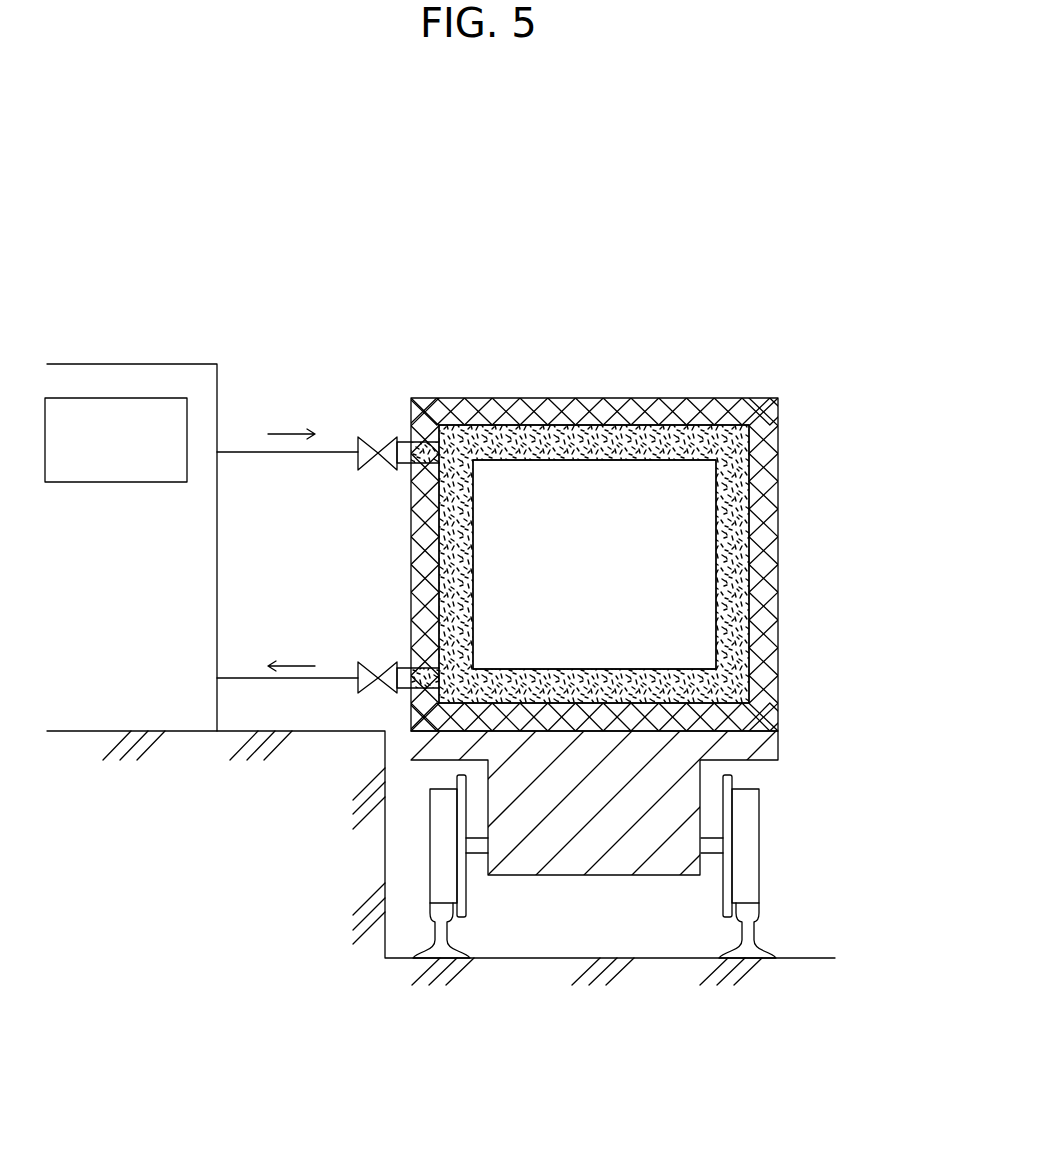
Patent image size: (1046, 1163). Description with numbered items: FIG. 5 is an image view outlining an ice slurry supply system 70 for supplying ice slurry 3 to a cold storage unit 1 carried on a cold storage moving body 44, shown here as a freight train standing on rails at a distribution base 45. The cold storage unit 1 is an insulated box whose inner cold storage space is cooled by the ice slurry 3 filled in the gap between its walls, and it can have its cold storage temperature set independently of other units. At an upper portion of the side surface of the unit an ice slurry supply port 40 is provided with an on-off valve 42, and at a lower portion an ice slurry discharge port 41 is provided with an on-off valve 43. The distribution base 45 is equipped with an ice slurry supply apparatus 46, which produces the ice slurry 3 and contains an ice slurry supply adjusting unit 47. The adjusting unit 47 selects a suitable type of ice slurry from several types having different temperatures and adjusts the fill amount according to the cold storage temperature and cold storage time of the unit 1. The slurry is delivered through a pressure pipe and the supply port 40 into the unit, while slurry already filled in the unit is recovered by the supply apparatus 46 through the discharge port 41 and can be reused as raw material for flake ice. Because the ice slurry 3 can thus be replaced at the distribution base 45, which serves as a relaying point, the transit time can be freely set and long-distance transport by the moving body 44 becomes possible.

The cold storage unit 1 is at (605, 397).
The ice slurry 3 is at (503, 430).
The ice slurry supply port 40 is at (403, 440).
The ice slurry discharge port 41 is at (403, 666).
The on-off valve 42 is at (360, 436).
The on-off valve 43 is at (360, 661).
The cold storage moving body 44 is at (789, 731).
The distribution base 45 is at (128, 331).
The ice slurry supply apparatus 46 is at (93, 556).
The ice slurry supply adjusting unit 47 is at (98, 454).
The ice slurry supply system 70 is at (459, 224).